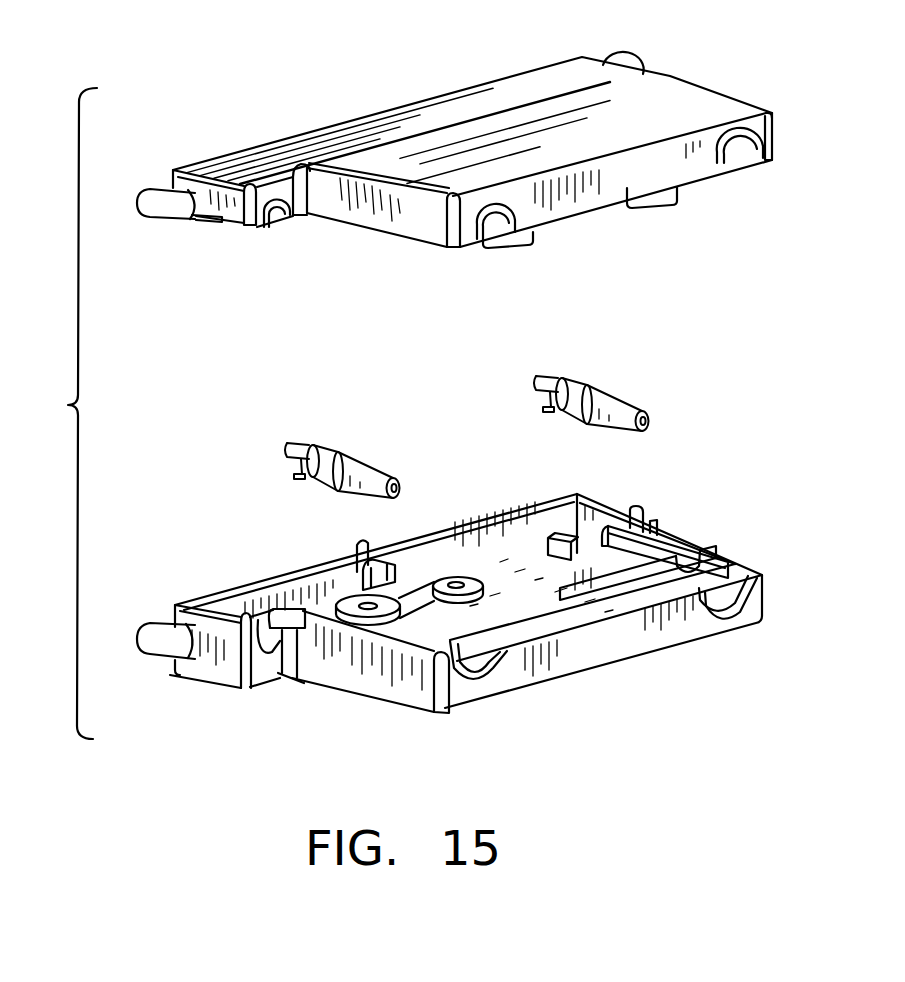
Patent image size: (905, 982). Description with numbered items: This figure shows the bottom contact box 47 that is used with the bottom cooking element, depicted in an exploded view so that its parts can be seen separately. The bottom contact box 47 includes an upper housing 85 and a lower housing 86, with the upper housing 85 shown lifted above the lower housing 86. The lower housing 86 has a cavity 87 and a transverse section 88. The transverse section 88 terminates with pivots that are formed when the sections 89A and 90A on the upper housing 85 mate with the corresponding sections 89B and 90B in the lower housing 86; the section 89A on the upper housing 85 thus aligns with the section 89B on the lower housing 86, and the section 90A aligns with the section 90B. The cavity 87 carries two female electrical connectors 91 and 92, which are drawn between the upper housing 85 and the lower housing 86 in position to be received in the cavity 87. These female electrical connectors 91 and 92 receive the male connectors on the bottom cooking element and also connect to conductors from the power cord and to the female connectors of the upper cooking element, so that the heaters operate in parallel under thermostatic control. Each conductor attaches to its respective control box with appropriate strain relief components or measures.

The bottom contact box 47 is at (57, 413).
The upper housing 85 is at (713, 113).
The lower housing 86 is at (752, 615).
The cavity 87 is at (523, 620).
The transverse section 88 is at (278, 588).
The section 89A is at (142, 218).
The section 89B is at (146, 657).
The section 90A is at (627, 58).
The section 90B is at (650, 527).
The female electrical connector 91 is at (330, 445).
The female electrical connector 92 is at (604, 374).